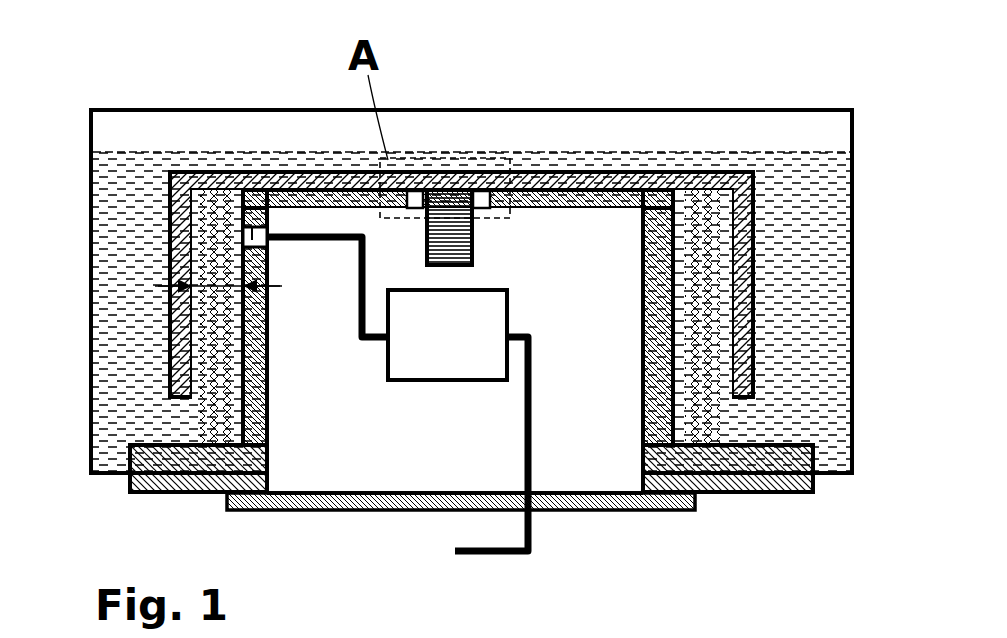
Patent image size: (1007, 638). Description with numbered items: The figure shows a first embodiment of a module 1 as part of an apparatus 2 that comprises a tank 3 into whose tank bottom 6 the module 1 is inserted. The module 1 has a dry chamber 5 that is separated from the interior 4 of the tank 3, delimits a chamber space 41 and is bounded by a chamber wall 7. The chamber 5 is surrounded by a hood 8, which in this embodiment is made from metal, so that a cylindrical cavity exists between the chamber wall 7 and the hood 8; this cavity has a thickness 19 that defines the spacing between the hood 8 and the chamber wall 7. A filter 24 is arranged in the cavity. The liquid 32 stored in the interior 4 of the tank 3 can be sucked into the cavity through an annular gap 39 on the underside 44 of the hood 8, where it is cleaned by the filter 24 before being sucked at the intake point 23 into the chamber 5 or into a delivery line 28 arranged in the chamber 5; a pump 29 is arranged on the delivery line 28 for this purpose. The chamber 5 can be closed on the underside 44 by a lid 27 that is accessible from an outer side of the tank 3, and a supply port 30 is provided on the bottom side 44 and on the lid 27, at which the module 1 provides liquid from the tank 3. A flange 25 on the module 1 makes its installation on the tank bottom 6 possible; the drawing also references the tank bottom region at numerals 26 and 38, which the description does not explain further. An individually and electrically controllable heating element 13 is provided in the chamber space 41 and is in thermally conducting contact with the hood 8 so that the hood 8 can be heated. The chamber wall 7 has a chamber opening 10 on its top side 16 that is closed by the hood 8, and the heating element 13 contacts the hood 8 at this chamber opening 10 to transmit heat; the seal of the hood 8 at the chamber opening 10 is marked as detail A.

The module 1 is at (780, 195).
The apparatus 2 is at (788, 95).
The tank 3 is at (165, 110).
The interior of the tank 4 is at (655, 140).
The chamber 5 is at (635, 423).
The tank bottom 6 is at (838, 476).
The chamber wall 7 is at (594, 190).
The hood 8 is at (722, 172).
The chamber opening 10 is at (483, 195).
The heating element 13 is at (457, 242).
The top side 16 is at (559, 150).
The thickness 19 is at (158, 286).
The intake point 23 is at (250, 226).
The filter 24 is at (712, 432).
The flange 25 is at (172, 496).
The housing bottom left 26 is at (128, 477).
The lid 27 is at (260, 512).
The delivery line 28 is at (300, 230).
The pump 29 is at (397, 382).
The supply port 30 is at (470, 555).
The liquid 32 is at (114, 170).
The opening 38 is at (438, 200).
The annular gap 39 is at (740, 423).
The chamber space 41 is at (562, 472).
The underside 44 is at (426, 528).